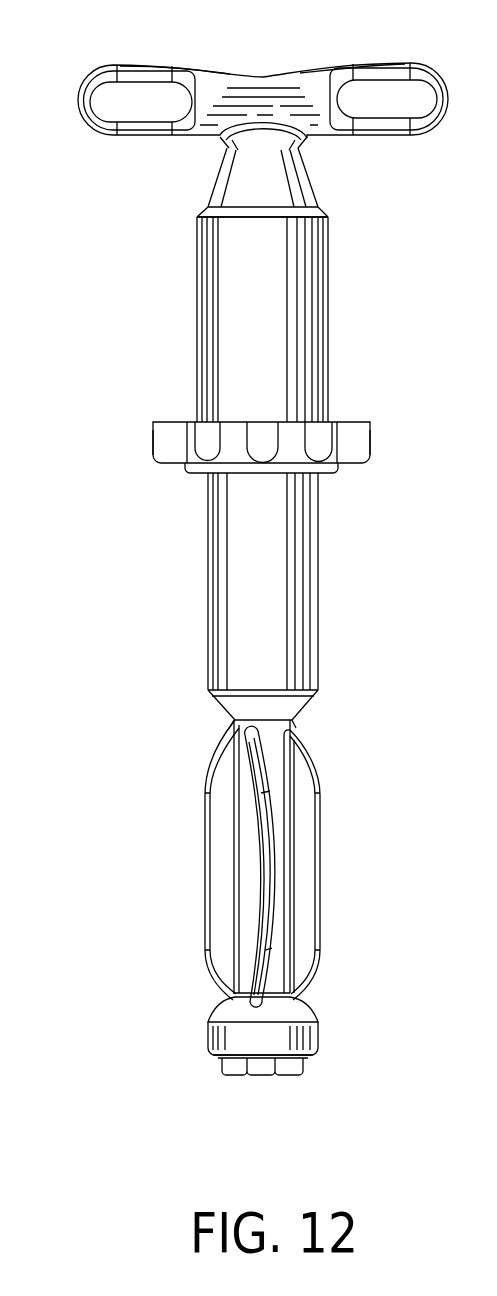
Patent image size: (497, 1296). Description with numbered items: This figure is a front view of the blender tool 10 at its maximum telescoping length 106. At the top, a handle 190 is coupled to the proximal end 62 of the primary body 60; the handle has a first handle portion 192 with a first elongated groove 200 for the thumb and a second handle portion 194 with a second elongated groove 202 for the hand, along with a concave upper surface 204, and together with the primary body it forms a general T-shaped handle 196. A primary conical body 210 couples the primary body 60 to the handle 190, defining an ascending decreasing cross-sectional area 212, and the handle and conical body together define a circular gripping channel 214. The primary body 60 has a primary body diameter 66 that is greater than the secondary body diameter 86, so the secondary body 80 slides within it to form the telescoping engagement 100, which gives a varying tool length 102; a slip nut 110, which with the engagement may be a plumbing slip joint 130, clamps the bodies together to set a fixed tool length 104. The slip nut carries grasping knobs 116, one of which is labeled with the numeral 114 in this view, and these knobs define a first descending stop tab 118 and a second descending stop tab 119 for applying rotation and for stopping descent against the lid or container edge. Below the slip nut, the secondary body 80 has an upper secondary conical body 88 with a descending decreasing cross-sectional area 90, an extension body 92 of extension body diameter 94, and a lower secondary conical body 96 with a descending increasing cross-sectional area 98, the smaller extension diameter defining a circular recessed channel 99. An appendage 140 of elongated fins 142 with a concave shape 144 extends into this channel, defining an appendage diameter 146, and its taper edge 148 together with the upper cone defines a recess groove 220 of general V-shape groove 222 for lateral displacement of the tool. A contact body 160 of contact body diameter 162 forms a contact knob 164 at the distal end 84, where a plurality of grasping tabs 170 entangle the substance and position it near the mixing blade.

The blender tool 10 is at (126, 66).
The primary body 60 is at (328, 297).
The proximal end 62 is at (198, 217).
The primary body diameter 66 is at (198, 312).
The secondary body 80 is at (209, 607).
The distal end 84 is at (318, 1058).
The secondary body diameter 86 is at (320, 566).
The upper secondary conical body 88 is at (224, 708).
The descending decreasing cross-sectional area 90 is at (305, 712).
The extension body 92 is at (247, 793).
The extension body diameter 94 is at (250, 836).
The lower secondary conical body 96 is at (220, 1003).
The descending increasing cross-sectional area 98 is at (300, 1005).
The circular recessed channel 99 is at (233, 720).
The telescoping engagement 100 is at (208, 472).
The varying tool length 102 is at (318, 637).
The fixed tool length 104 is at (198, 261).
The maximum telescoping length 106 is at (209, 562).
The slip nut 110 is at (233, 435).
The collar slot right 114 is at (296, 435).
The grasping knobs 116 is at (206, 438).
The first descending stop tab 118 is at (156, 447).
The second descending stop tab 119 is at (370, 438).
The plumbing slip joint 130 is at (335, 466).
The appendage 140 is at (208, 927).
The elongated fins 142 is at (205, 889).
The concave shape 144 is at (280, 897).
The appendage diameter 146 is at (325, 838).
The taper edge 148 is at (320, 770).
The contact body 160 is at (208, 1027).
The contact body diameter 162 is at (208, 1048).
The contact knob 164 is at (318, 1042).
The grasping tabs 170 is at (237, 1077).
The handle 190 is at (250, 82).
The first handle portion 192 is at (85, 80).
The second handle portion 194 is at (428, 70).
The general T-shaped handle 196 is at (328, 72).
The first elongated groove 200 is at (395, 108).
The second elongated groove 202 is at (135, 110).
The concave upper surface 204 is at (217, 73).
The primary conical body 210 is at (219, 172).
The ascending decreasing cross-sectional area 212 is at (315, 190).
The circular gripping channel 214 is at (302, 140).
The recess groove 220 is at (220, 735).
The general V-shape groove 222 is at (300, 722).